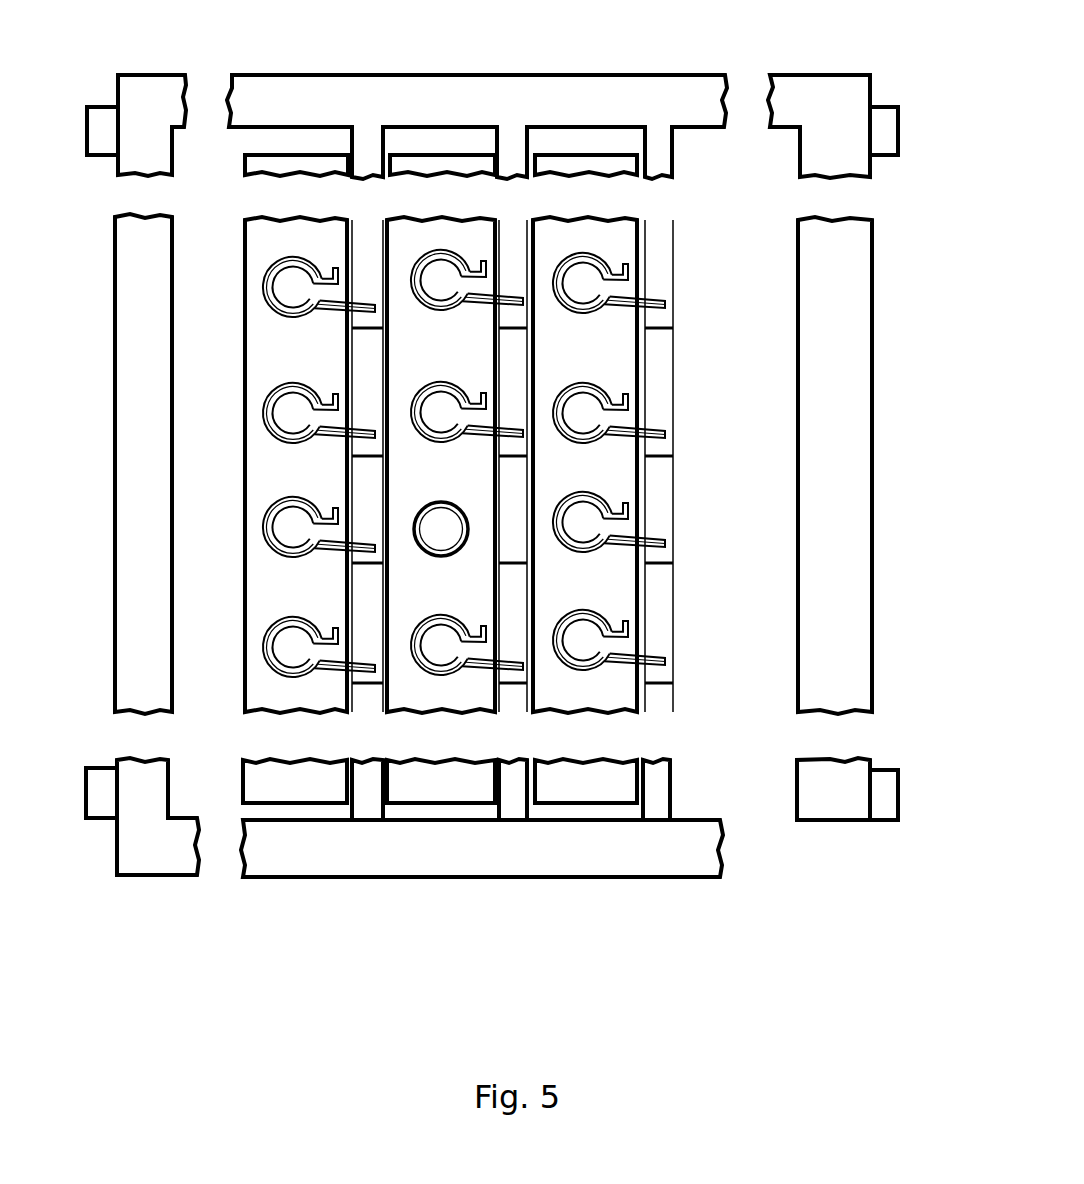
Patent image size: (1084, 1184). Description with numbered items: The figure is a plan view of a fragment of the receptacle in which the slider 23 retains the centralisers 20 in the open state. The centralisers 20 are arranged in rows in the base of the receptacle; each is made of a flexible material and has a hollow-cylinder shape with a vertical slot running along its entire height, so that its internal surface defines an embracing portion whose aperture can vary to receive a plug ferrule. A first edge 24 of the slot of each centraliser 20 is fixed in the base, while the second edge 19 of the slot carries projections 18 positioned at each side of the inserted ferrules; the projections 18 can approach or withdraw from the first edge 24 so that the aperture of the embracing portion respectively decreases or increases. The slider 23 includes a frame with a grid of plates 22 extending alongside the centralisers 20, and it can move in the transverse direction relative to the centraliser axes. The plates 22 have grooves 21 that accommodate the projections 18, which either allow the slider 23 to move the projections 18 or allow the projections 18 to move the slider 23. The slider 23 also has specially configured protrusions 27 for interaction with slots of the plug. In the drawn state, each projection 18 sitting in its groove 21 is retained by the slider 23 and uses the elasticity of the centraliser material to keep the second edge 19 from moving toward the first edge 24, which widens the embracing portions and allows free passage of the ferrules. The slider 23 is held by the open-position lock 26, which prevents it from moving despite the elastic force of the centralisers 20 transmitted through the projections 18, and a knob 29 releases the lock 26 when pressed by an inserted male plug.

The projection 18 is at (832, 62).
The second edge 19 is at (735, 60).
The centraliser 20 is at (535, 63).
The groove 21 is at (365, 685).
The plate 22 is at (655, 798).
The slider 23 is at (687, 840).
The first edge 24 is at (667, 62).
The open-position lock 26 is at (290, 650).
The protrusion 27 is at (100, 803).
The knob 29 is at (450, 530).